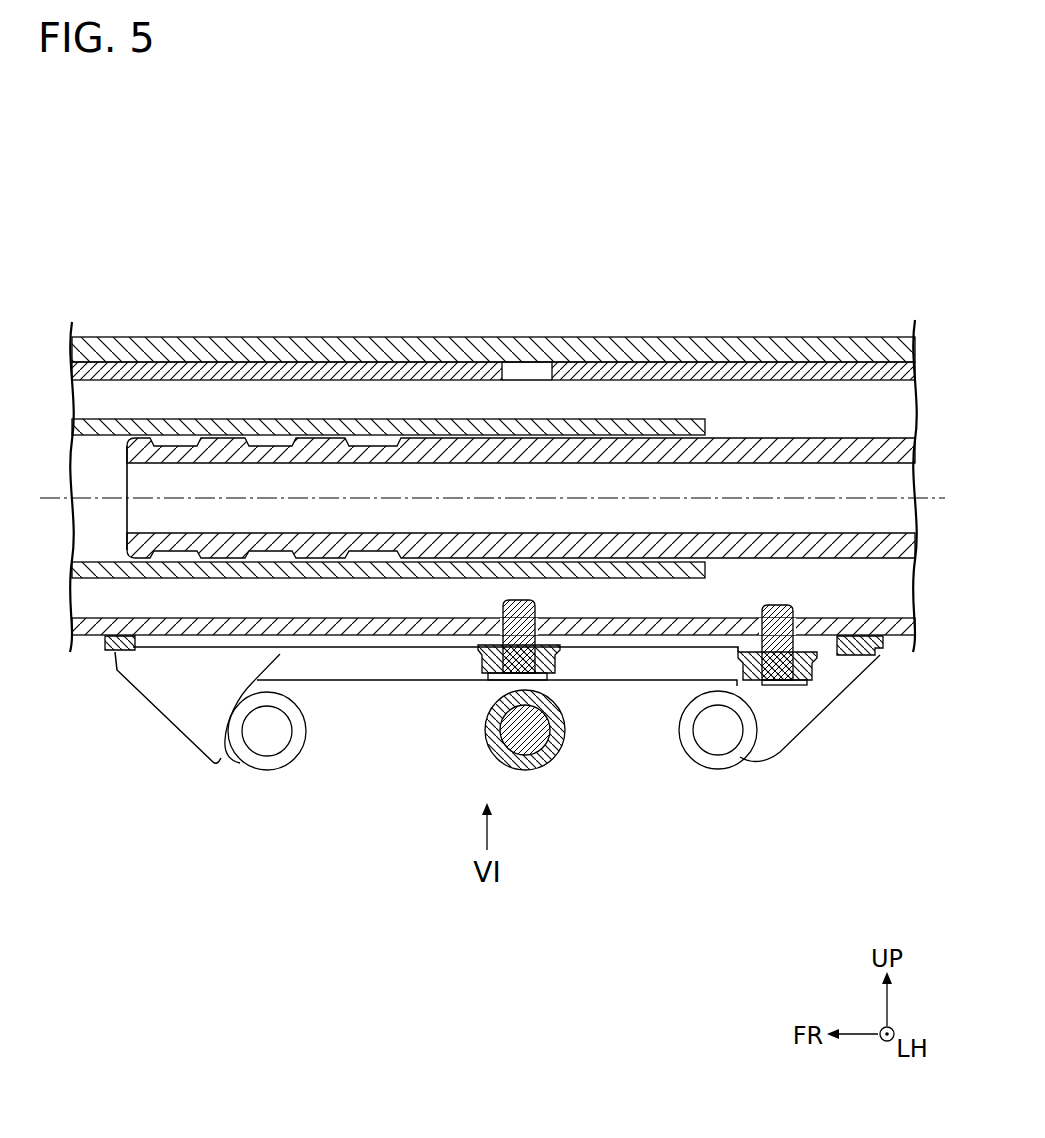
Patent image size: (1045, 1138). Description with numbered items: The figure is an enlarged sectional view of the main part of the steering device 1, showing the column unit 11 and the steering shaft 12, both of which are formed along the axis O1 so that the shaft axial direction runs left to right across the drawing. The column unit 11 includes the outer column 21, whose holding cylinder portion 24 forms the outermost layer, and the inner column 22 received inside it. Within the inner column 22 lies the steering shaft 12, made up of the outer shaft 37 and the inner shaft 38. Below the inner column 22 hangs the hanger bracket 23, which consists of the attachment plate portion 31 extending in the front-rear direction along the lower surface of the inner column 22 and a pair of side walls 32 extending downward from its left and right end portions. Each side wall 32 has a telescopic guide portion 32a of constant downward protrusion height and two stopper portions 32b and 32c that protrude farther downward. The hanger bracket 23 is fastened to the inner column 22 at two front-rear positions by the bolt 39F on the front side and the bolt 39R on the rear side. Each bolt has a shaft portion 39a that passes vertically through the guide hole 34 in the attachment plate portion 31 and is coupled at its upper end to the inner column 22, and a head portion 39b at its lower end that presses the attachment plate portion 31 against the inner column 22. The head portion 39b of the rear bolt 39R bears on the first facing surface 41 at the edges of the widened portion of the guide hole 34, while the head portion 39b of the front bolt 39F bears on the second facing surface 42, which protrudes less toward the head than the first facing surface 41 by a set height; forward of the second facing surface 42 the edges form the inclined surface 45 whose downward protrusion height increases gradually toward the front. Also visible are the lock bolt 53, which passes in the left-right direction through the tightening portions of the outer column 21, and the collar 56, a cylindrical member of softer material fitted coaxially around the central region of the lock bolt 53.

The steering device 1 is at (790, 272).
The axis O1 is at (55, 505).
The column unit 11 is at (492, 233).
The steering shaft 12 is at (602, 233).
The outer column 21 is at (380, 330).
The inner column 22 is at (416, 360).
The holding cylinder portion 24 is at (257, 337).
The outer shaft 37 is at (645, 419).
The inner shaft 38 is at (735, 437).
The bolt on the front side 39F is at (475, 686).
The bolt on the rear side 39R is at (815, 680).
The shaft portion 39a is at (812, 657).
The head portion 39b is at (797, 630).
The side wall 32 is at (466, 787).
The telescopic guide portion 32a is at (388, 682).
The stopper portion 32b is at (218, 760).
The stopper portion 32c is at (785, 758).
The hanger bracket 23 is at (136, 710).
The attachment plate portion 31 is at (113, 652).
The guide hole 34 is at (143, 640).
The first facing surface 41 is at (765, 685).
The second facing surface 42 is at (663, 648).
The inclined surface 45 is at (320, 650).
The lock bolt 53 is at (256, 758).
The collar 56 is at (292, 764).